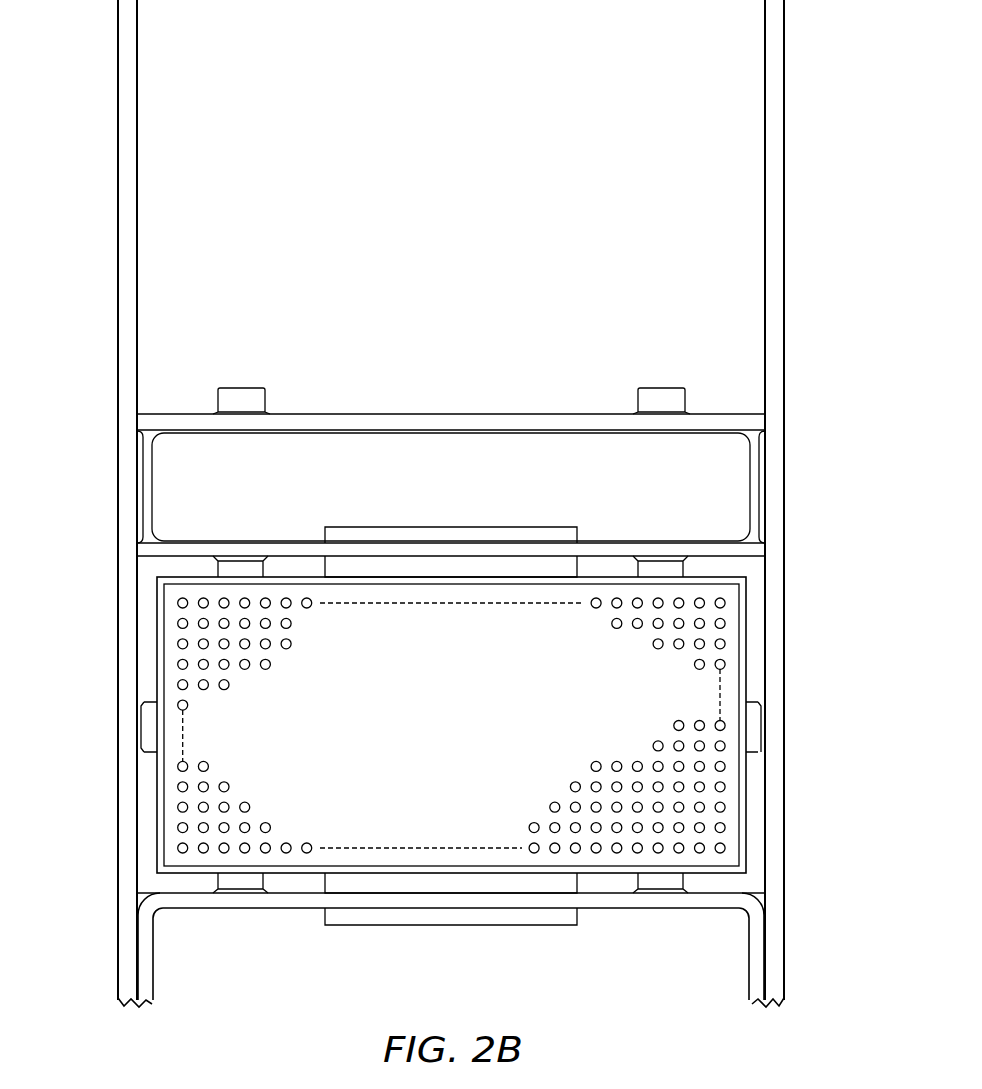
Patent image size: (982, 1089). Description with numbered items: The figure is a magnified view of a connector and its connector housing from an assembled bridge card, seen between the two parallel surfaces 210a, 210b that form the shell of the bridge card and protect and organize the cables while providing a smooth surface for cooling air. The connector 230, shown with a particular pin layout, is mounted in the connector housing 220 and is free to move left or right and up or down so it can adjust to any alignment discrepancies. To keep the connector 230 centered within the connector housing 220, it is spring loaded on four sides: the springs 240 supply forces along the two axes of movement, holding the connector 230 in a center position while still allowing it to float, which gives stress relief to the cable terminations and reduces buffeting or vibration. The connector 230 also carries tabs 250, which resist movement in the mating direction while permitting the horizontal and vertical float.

The parallel surface 210a is at (784, 305).
The parallel surface 210b is at (118, 320).
The connector housing 220 is at (602, 548).
The connector 230 is at (467, 732).
The spring 240 is at (218, 571).
The tab 250 is at (455, 525).